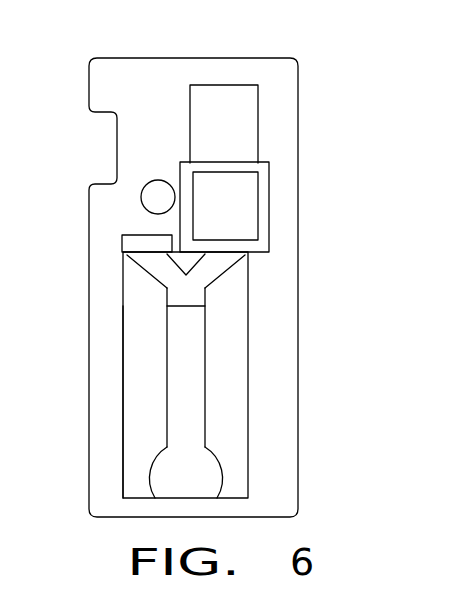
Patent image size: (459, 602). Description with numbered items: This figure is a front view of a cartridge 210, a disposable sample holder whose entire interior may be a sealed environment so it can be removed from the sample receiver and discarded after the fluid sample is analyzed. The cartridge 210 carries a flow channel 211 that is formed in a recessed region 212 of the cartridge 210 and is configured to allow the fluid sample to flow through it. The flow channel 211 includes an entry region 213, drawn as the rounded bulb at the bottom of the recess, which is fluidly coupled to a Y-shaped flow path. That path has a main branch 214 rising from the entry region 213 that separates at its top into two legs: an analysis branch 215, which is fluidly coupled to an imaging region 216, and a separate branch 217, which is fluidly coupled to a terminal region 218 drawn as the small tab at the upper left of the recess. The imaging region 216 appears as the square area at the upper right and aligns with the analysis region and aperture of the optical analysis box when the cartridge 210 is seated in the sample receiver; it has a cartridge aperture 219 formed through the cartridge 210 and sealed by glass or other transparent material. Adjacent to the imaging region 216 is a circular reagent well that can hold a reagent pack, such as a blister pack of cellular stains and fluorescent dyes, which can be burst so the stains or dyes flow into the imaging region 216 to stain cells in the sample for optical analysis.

The cartridge 210 is at (302, 82).
The flow channel 211 is at (158, 375).
The recessed region 212 is at (140, 457).
The entry region 213 is at (208, 476).
The main branch 214 is at (205, 398).
The analysis branch 215 is at (228, 271).
The imaging region 216 is at (227, 207).
The separate branch 217 is at (153, 267).
The terminal region 218 is at (136, 232).
The cartridge aperture 219 is at (227, 172).